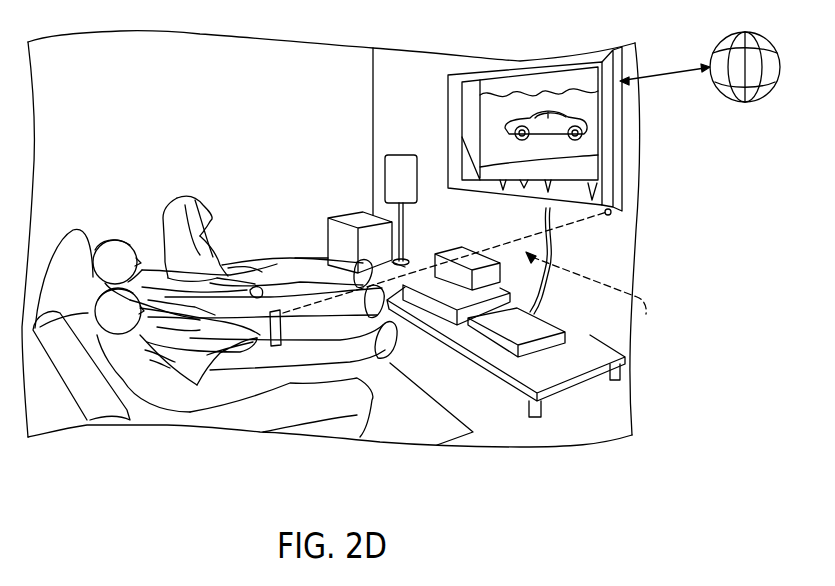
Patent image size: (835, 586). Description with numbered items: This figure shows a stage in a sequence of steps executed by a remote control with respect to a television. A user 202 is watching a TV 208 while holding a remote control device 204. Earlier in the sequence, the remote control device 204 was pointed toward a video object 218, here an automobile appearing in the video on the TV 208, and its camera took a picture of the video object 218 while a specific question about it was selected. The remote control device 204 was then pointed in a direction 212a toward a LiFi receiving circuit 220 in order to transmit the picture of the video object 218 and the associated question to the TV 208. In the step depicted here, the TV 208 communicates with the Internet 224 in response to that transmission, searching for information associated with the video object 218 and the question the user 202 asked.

The user 202 is at (130, 385).
The remote control device 204 is at (200, 390).
The TV 208 is at (613, 136).
The direction 212a is at (472, 277).
The video object 218 is at (524, 113).
The LiFi receiving circuit 220 is at (594, 215).
The Internet 224 is at (745, 113).